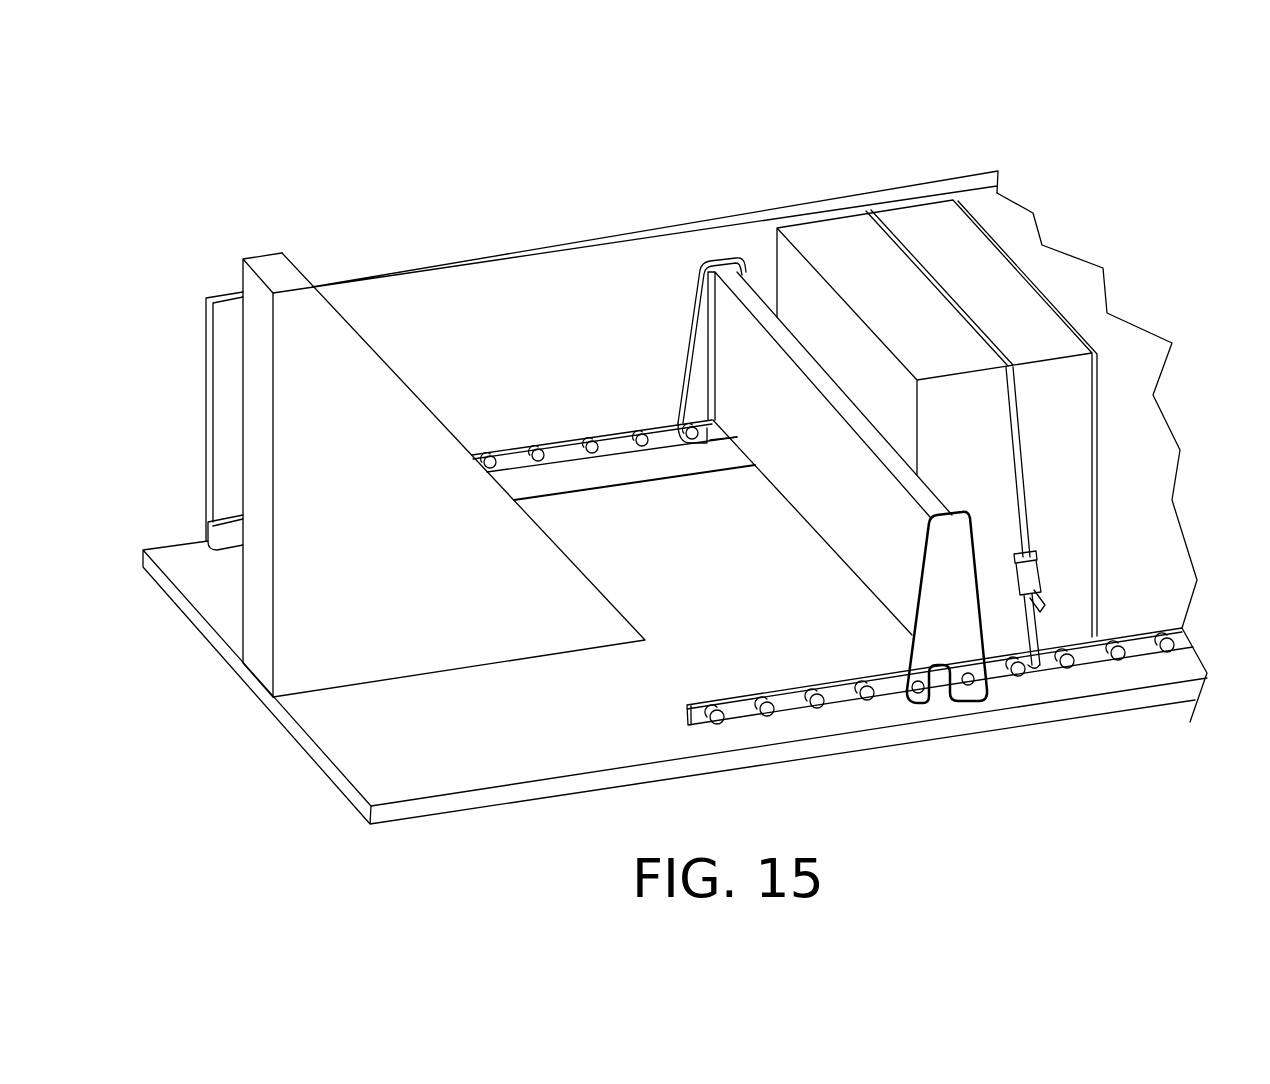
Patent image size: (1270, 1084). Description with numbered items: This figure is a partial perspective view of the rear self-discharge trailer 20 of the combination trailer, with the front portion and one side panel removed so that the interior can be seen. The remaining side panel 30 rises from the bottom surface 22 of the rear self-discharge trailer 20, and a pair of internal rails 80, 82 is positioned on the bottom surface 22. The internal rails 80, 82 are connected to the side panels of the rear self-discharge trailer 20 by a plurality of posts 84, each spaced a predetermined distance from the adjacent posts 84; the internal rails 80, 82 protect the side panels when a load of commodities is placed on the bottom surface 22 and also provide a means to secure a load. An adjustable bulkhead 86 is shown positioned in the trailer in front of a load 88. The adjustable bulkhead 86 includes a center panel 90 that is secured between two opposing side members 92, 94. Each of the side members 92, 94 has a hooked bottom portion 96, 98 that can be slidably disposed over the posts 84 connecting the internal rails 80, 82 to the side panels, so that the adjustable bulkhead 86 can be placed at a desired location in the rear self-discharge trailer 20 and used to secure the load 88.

The rear self-discharge trailer 20 is at (367, 218).
The bottom surface 22 is at (367, 740).
The side panel 30 is at (470, 310).
The internal rail 80 is at (787, 700).
The internal rail 82 is at (612, 443).
The posts 84 is at (540, 457).
The adjustable bulkhead 86 is at (962, 609).
The load 88 is at (848, 242).
The center panel 90 is at (748, 355).
The side member 92 is at (953, 672).
The side member 94 is at (698, 330).
The hooked bottom portion 96 is at (940, 650).
The hooked bottom portion 98 is at (687, 443).